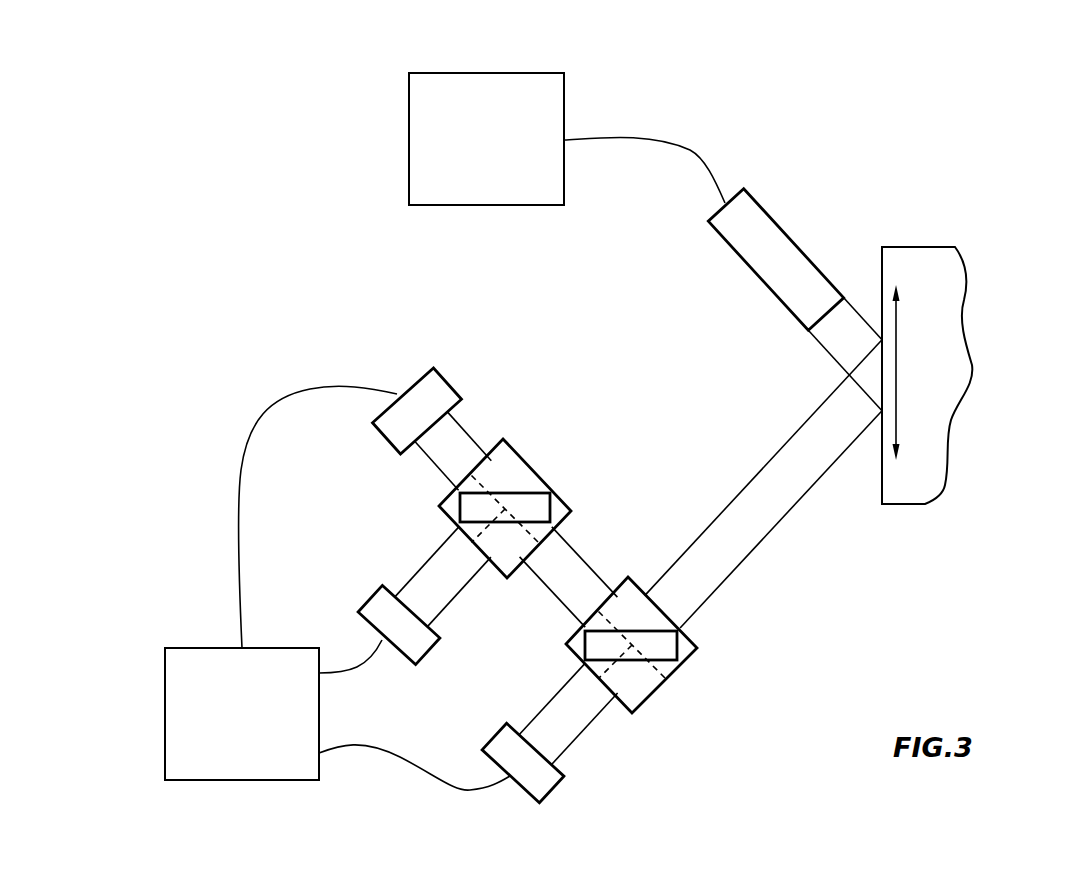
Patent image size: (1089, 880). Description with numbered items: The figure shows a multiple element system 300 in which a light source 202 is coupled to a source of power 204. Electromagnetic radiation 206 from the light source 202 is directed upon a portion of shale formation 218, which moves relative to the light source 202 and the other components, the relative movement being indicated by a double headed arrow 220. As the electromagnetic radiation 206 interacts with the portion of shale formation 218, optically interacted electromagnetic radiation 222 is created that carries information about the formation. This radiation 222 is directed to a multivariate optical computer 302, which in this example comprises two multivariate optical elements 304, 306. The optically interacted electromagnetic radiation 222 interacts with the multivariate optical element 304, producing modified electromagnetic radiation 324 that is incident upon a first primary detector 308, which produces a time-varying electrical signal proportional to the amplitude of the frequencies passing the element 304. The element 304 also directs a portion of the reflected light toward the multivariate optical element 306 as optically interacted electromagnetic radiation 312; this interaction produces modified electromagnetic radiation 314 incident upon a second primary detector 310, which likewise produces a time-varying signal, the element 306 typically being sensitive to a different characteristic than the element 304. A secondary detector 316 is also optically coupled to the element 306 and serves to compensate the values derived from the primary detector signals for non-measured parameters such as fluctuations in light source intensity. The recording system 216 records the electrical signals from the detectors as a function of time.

The system 300 is at (200, 88).
The source of power 204 is at (553, 73).
The light source 202 is at (758, 198).
The electromagnetic radiation 206 is at (848, 317).
The portion of shale formation 218 is at (937, 278).
The double headed arrow 220 is at (898, 378).
The optically interacted electromagnetic radiation 222 is at (828, 417).
The multivariate optical computer 302 is at (537, 382).
The multivariate optical element 304 is at (668, 647).
The multivariate optical element 306 is at (535, 505).
The optically interacted electromagnetic radiation 312 is at (570, 560).
The modified electromagnetic radiation 314 is at (437, 575).
The secondary detector 316 is at (440, 385).
The second primary detector 310 is at (418, 653).
The modified electromagnetic radiation 324 is at (577, 718).
The first primary detector 308 is at (550, 793).
The recording system 216 is at (224, 754).